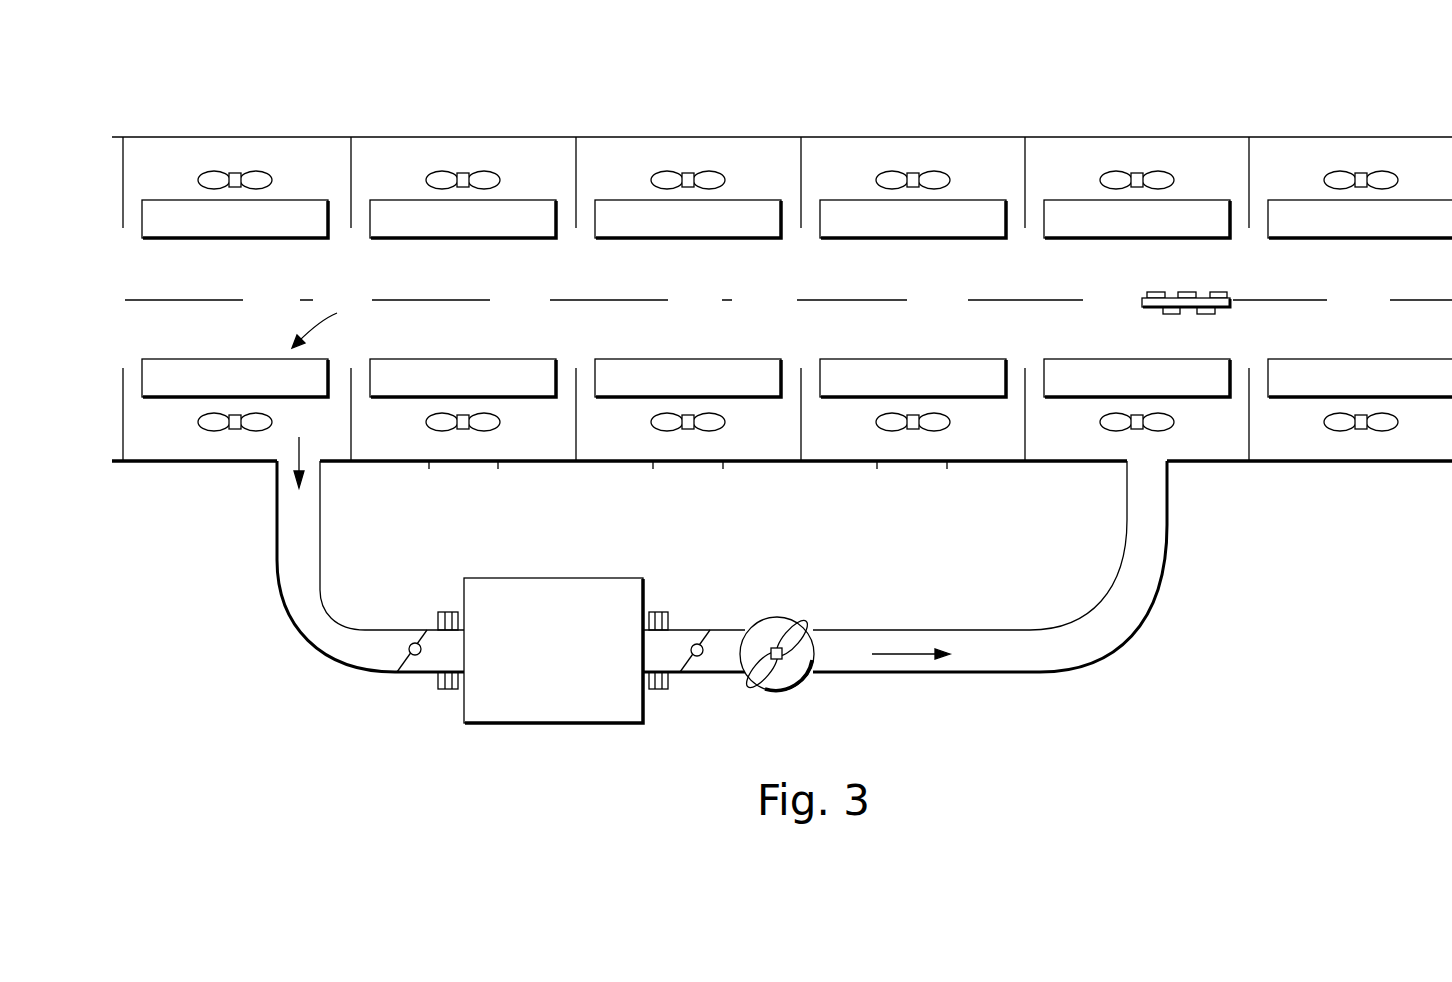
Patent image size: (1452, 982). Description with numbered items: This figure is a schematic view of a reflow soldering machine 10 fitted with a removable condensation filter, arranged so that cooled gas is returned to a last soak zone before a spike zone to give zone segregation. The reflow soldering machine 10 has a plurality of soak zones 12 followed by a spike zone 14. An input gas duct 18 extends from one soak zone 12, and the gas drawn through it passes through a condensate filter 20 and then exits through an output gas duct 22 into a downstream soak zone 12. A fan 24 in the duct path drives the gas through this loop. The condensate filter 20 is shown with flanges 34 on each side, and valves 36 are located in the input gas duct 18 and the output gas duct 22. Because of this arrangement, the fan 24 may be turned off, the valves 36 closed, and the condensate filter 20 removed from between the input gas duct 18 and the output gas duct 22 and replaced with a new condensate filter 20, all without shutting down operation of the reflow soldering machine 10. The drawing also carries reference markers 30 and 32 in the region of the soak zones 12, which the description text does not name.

The reflow soldering machine 10 is at (845, 90).
The soak zone 12 is at (473, 276).
The spike zone 14 is at (1282, 167).
The input gas duct 18 is at (285, 560).
The condensate filter 20 is at (535, 578).
The output gas duct 22 is at (1157, 527).
The fan 24 is at (783, 617).
The floor tile unit 30 is at (1220, 310).
The air flow path 32 is at (145, 300).
The flange 34 is at (443, 611).
The valve 36 is at (399, 668).